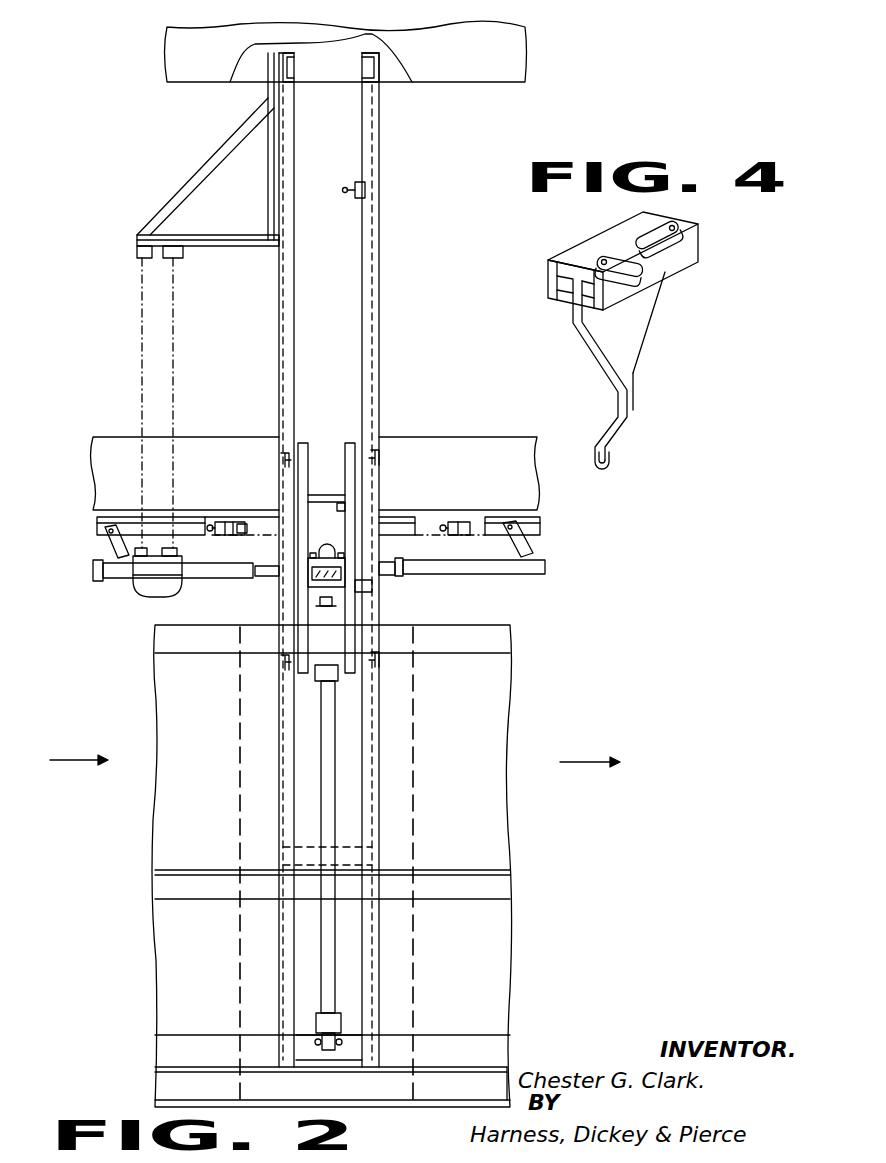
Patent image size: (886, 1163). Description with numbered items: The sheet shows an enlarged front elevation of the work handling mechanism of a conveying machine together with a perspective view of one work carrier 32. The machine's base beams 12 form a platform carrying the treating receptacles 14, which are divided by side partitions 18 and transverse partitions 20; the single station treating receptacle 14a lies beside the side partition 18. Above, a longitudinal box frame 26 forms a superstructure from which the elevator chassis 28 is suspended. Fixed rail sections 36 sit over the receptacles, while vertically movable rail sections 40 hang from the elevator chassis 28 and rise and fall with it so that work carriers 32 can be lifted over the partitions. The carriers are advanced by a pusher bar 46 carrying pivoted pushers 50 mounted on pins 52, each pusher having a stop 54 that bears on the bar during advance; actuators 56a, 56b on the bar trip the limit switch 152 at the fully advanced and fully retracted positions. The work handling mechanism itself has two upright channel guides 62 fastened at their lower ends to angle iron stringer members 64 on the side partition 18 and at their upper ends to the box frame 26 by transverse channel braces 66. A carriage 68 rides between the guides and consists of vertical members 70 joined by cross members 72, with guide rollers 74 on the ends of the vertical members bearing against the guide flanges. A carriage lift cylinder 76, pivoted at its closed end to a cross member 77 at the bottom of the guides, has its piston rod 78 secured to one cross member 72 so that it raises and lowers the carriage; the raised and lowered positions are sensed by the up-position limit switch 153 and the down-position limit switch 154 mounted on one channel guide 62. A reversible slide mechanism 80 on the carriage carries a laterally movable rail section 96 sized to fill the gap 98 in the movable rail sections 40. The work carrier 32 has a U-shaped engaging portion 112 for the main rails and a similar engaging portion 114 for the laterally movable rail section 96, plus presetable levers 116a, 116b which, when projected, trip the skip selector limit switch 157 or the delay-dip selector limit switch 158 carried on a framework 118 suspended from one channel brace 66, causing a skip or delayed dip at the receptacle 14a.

In FIG. 2, the base beams 12 is at (375, 1080).
In FIG. 2, the treating receptacles 14 is at (500, 706).
In FIG. 2, the single station treating receptacle 14a is at (400, 752).
In FIG. 2, the side partitions 18 is at (205, 830).
In FIG. 2, the transverse partitions 20 is at (238, 782).
In FIG. 2, the longitudinal box frame 26 is at (470, 82).
In FIG. 2, the elevator chassis 28 is at (440, 436).
In FIG. 2, the work carrier 32 is at (205, 600).
In FIG. 4, the work carrier 32 is at (655, 343).
In FIG. 2, the fixed rail sections 36 is at (95, 581).
In FIG. 2, the vertically movable rail sections 40 is at (250, 578).
In FIG. 2, the pusher bar 46 is at (97, 522).
In FIG. 2, the pushers 50 is at (115, 557).
In FIG. 2, the pins 52 is at (500, 525).
In FIG. 2, the stop 54 is at (105, 545).
In FIG. 2, the actuator 56a is at (222, 522).
In FIG. 2, the actuator 56b is at (458, 522).
In FIG. 2, the channel guides 62 is at (281, 357).
In FIG. 2, the angle iron stringer members 64 is at (485, 645).
In FIG. 2, the transverse channel braces 66 is at (285, 60).
In FIG. 2, the carriage 68 is at (311, 443).
In FIG. 2, the vertical members 70 is at (345, 495).
In FIG. 2, the cross members 72 is at (348, 508).
In FIG. 2, the guide rollers 74 is at (283, 455).
In FIG. 2, the carriage lift cylinder 76 is at (325, 955).
In FIG. 2, the cross member 77 is at (325, 1045).
In FIG. 2, the piston rod 78 is at (338, 680).
In FIG. 2, the reversible slide mechanism 80 is at (348, 559).
In FIG. 2, the laterally movable rail section 96 is at (395, 576).
In FIG. 2, the gap 98 is at (266, 578).
In FIG. 4, the U-shaped engaging portion 112 is at (548, 268).
In FIG. 4, the U-shaped engaging portion 114 is at (598, 296).
In FIG. 2, the lever 116a is at (140, 591).
In FIG. 4, the lever 116a is at (647, 272).
In FIG. 2, the lever 116b is at (177, 553).
In FIG. 4, the lever 116b is at (662, 238).
In FIG. 2, the framework 118 is at (163, 206).
In FIG. 2, the limit switch 152 is at (236, 508).
In FIG. 2, the up-position limit switch 153 is at (365, 190).
In FIG. 2, the down-position limit switch 154 is at (372, 590).
In FIG. 2, the skip selector limit switch 157 is at (137, 252).
In FIG. 2, the delay-dip selector limit switch 158 is at (183, 256).